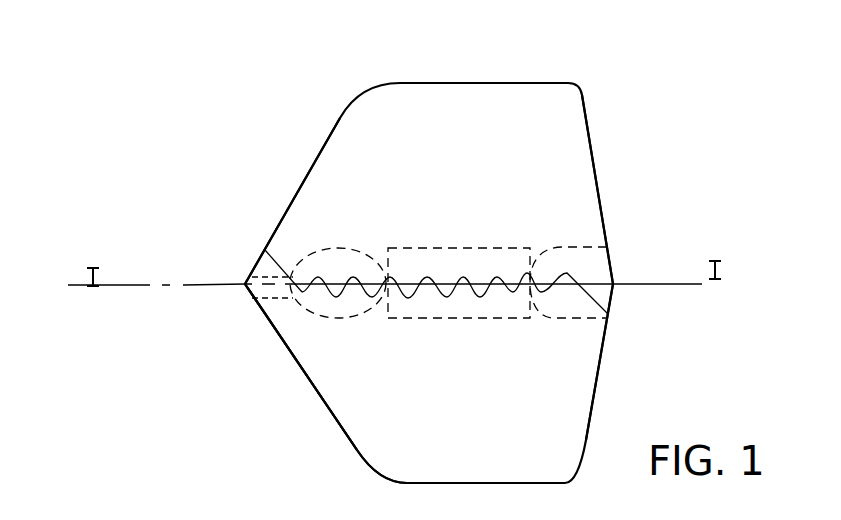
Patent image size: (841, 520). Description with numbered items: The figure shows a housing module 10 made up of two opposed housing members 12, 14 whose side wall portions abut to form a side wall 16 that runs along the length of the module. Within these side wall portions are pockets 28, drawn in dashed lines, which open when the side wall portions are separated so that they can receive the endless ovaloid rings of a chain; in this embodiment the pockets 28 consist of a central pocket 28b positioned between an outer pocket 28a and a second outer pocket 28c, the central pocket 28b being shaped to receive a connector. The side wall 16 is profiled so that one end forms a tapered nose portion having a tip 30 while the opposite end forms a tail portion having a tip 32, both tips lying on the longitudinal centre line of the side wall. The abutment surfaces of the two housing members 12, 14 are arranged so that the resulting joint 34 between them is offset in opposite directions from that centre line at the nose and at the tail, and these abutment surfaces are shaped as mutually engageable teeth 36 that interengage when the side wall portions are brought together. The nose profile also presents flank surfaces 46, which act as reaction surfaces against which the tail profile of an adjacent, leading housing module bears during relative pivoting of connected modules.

The housing module 10 is at (429, 242).
The housing member 12 is at (432, 80).
The housing member 14 is at (305, 385).
The side wall 16 is at (485, 157).
The pockets 28 is at (475, 279).
The outer pocket 28a is at (332, 308).
The central pocket 28b is at (487, 303).
The outer pocket 28c is at (570, 303).
The tip of nose portion 30 is at (245, 284).
The tip of tail portion 32 is at (621, 283).
The joint 34 is at (353, 276).
The mutually engageable teeth 36 is at (463, 276).
The flank surfaces 46 is at (295, 197).